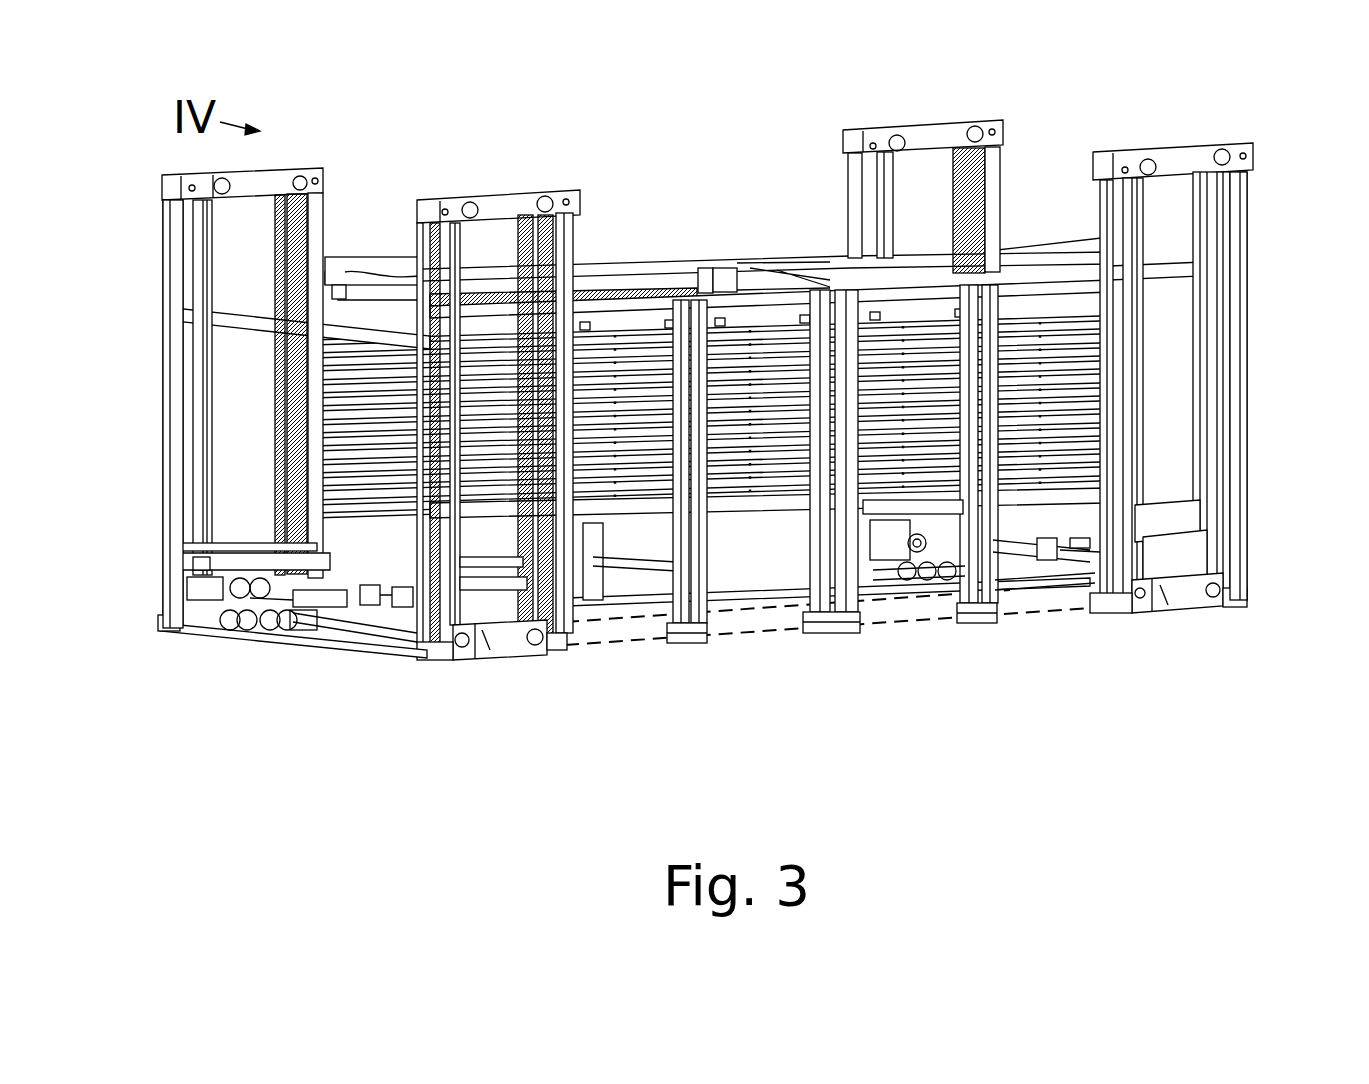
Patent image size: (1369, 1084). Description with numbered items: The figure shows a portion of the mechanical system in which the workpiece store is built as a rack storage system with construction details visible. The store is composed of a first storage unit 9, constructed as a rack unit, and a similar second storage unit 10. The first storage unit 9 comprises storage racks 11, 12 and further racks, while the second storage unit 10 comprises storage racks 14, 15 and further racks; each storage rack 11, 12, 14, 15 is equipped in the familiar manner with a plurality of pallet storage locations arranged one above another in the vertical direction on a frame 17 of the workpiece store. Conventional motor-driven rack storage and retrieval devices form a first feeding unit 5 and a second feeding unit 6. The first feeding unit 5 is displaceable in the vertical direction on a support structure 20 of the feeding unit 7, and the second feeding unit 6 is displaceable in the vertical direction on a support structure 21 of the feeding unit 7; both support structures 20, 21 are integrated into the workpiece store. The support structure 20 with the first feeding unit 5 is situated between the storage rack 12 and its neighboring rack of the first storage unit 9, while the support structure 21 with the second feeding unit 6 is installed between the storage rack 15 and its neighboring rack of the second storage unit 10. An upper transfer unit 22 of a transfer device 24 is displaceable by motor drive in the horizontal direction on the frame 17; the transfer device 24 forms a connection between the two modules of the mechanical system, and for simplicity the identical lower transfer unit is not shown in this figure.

The first feeding unit 5 is at (340, 625).
The second feeding unit 6 is at (1070, 592).
The feeding unit 7 is at (148, 458).
The first storage unit 9 is at (772, 195).
The second storage unit 10 is at (952, 655).
The storage rack 11 is at (778, 590).
The storage rack 12 is at (623, 603).
The storage rack 14 is at (897, 598).
The storage rack 15 is at (1035, 563).
The frame 17 is at (692, 645).
The support structure 20 is at (178, 268).
The support structure 21 is at (1242, 253).
The upper transfer unit 22 is at (368, 235).
The transfer device 24 is at (660, 243).